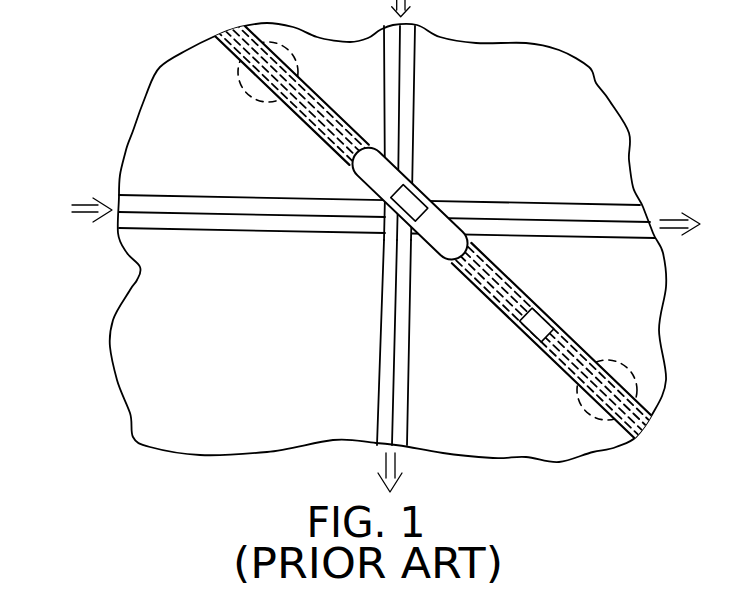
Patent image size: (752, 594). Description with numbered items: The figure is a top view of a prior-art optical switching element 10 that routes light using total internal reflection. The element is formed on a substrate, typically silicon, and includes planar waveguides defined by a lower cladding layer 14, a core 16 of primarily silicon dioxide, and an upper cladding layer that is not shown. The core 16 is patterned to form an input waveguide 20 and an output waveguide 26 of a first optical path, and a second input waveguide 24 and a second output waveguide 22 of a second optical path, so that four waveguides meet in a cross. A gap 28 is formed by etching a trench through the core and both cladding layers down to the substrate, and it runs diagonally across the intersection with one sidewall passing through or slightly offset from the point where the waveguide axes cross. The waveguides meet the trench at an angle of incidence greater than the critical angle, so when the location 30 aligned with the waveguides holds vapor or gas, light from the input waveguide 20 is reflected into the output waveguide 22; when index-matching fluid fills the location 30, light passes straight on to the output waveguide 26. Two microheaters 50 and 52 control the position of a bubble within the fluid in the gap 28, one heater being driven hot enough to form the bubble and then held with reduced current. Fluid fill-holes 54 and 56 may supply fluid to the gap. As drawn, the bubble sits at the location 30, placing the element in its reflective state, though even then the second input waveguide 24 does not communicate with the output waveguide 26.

The switching element 10 is at (110, 92).
The lower cladding layer 14 is at (127, 381).
The core 16 is at (160, 232).
The input waveguide 20 is at (212, 197).
The second output waveguide 22 is at (381, 268).
The second input waveguide 24 is at (411, 95).
The output waveguide 26 is at (513, 203).
The gap 28 is at (316, 140).
The location 30 is at (437, 252).
The microheater 50 is at (410, 177).
The microheater 52 is at (541, 316).
The fluid fill-hole 54 is at (297, 68).
The fluid fill-hole 56 is at (583, 410).